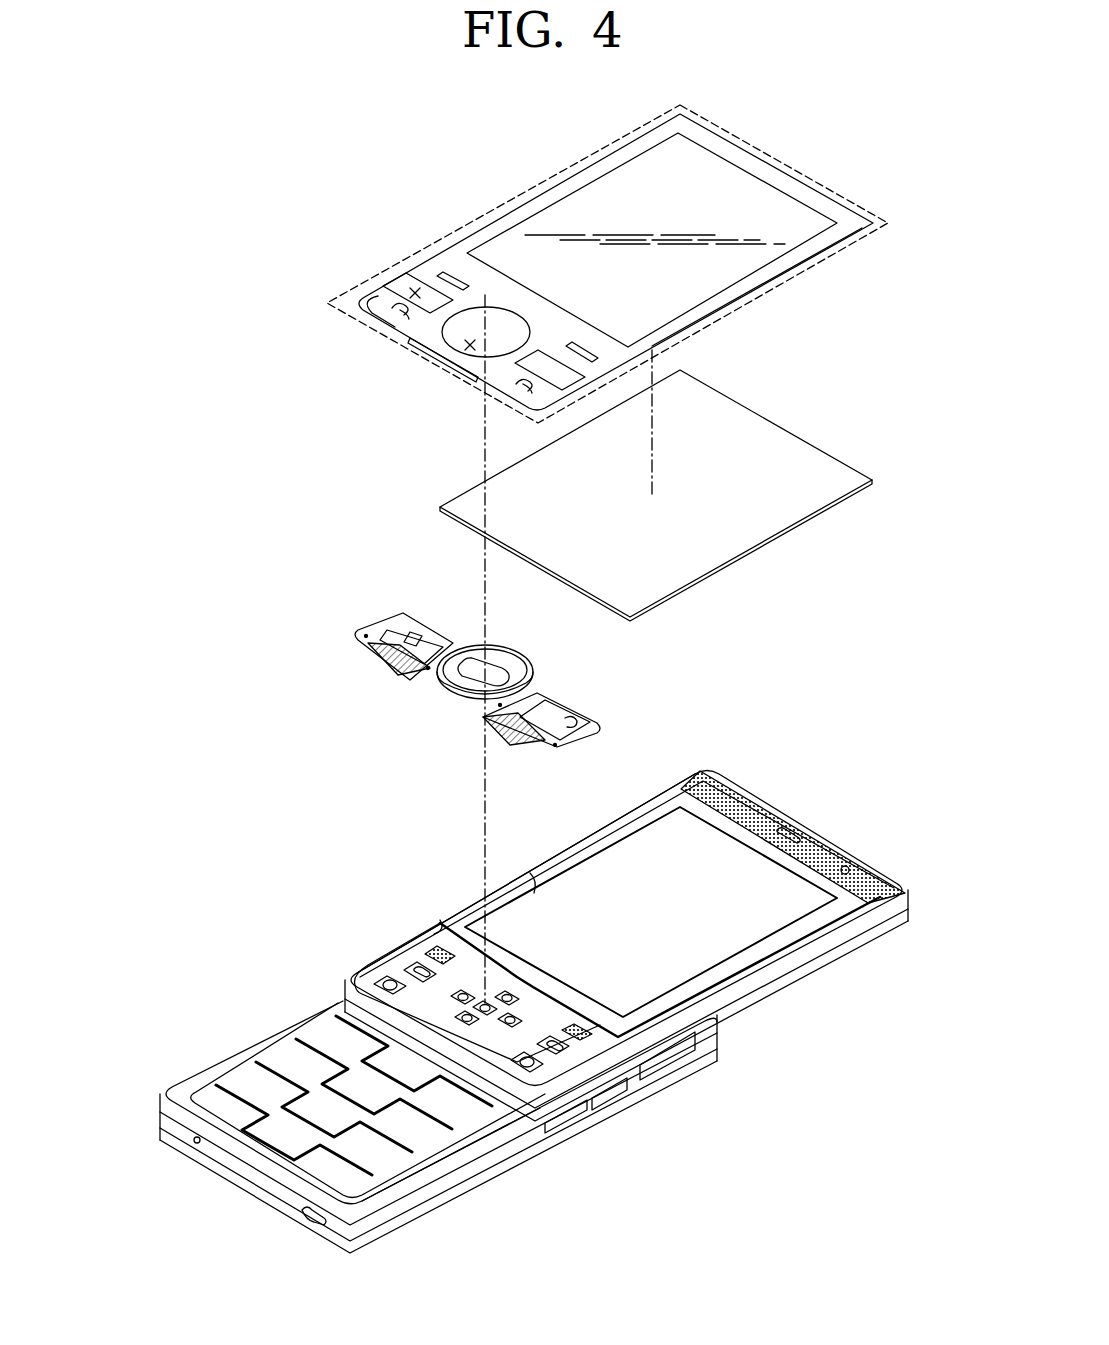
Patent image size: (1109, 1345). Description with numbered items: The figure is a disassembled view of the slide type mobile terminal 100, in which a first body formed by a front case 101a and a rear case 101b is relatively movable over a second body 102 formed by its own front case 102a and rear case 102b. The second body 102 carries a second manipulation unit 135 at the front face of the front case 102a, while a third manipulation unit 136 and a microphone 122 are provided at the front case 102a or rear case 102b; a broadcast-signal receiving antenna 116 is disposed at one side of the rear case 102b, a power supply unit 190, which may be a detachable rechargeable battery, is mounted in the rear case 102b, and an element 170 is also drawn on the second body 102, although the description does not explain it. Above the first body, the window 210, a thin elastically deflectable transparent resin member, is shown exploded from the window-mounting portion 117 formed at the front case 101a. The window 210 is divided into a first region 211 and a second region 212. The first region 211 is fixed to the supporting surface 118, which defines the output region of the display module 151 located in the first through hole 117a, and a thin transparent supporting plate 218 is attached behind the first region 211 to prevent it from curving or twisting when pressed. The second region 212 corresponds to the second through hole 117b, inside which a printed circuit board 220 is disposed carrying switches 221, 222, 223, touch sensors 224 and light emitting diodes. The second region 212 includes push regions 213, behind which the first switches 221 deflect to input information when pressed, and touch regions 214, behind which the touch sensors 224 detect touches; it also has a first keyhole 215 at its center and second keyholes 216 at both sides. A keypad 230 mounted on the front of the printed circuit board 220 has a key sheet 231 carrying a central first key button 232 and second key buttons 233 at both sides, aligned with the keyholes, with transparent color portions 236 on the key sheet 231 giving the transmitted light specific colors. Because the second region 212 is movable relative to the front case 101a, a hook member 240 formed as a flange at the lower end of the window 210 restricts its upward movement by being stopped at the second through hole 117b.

The mobile terminal 100 is at (207, 262).
The front case 101a is at (840, 920).
The rear case 101b is at (808, 957).
The second body 102 is at (296, 1002).
The front case 102a is at (712, 1025).
The rear case 102b is at (708, 1048).
The broadcast-signal receiving antenna 116 is at (303, 1218).
The window-mounting portion 117 is at (434, 811).
The first through hole 117a is at (527, 870).
The second through hole 117b is at (438, 917).
The supporting surface 118 is at (587, 847).
The microphone 122 is at (193, 1143).
The second manipulation unit 135 is at (247, 1047).
The third manipulation unit 136 is at (608, 1100).
The display module 151 is at (663, 835).
The interface connector 170 is at (665, 1062).
The power supply unit 190 is at (428, 1222).
The window 210 is at (503, 180).
The first region 211 is at (582, 160).
The second region 212 is at (387, 272).
The push regions 213 is at (372, 300).
The touch regions 214 is at (452, 275).
The first keyhole 215 is at (470, 350).
The second keyholes 216 is at (412, 290).
The supporting plate 218 is at (775, 433).
The printed circuit board 220 is at (375, 967).
The first switches 221 is at (385, 983).
The switches 222 is at (467, 1022).
The switches 223 is at (417, 967).
The touch sensors 224 is at (437, 950).
The keypad 230 is at (355, 606).
The key sheet 231 is at (362, 640).
The first key button 232 is at (510, 665).
The second key buttons 233 is at (410, 625).
The transparent color portions 236 is at (390, 665).
The hook member 240 is at (445, 360).